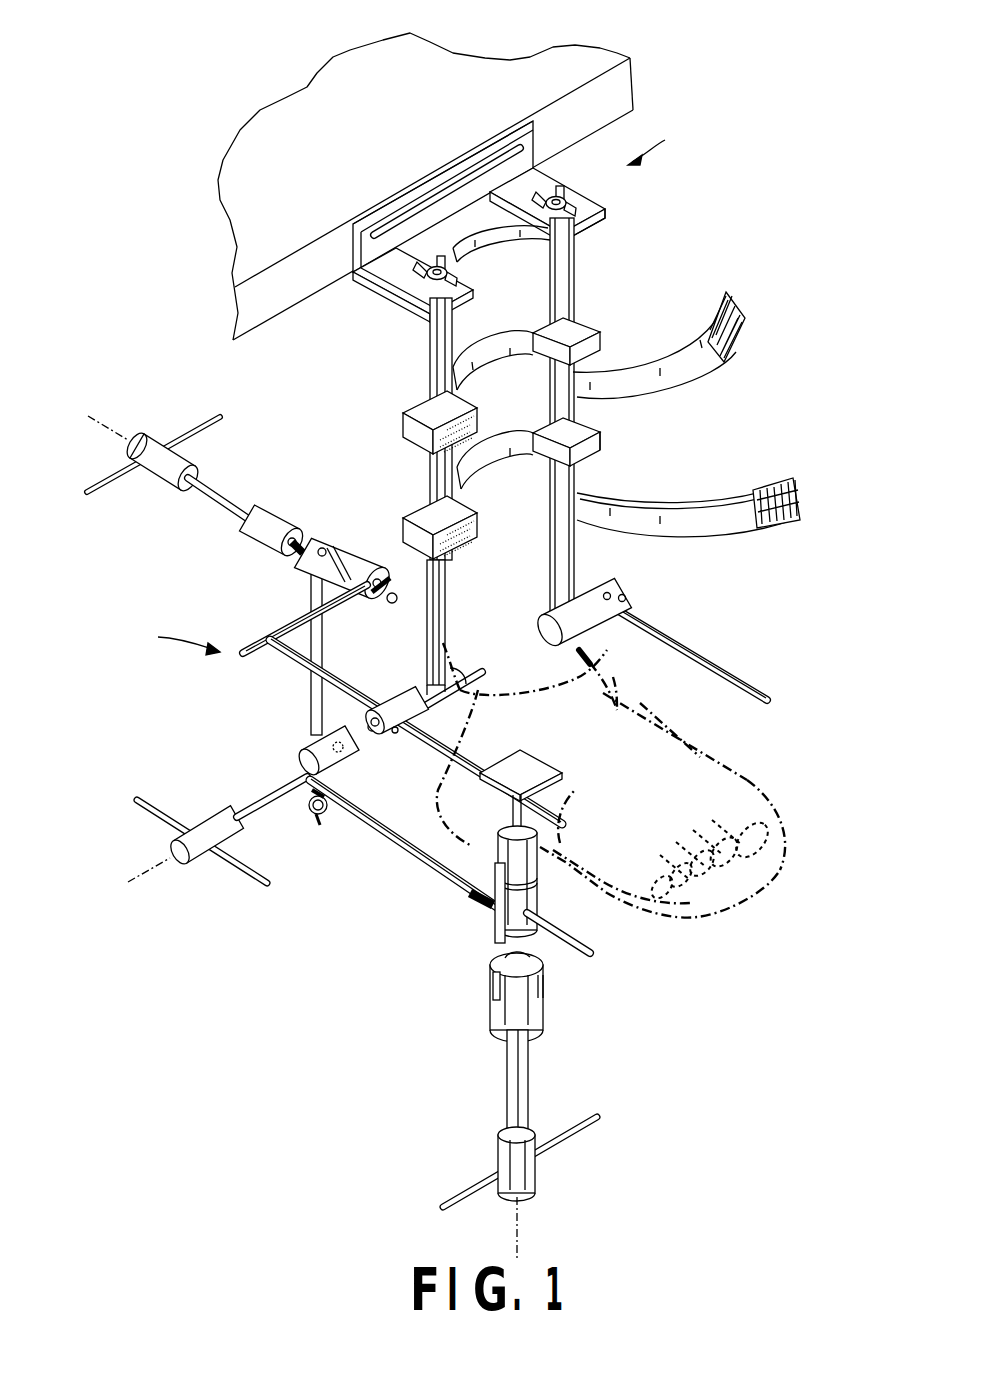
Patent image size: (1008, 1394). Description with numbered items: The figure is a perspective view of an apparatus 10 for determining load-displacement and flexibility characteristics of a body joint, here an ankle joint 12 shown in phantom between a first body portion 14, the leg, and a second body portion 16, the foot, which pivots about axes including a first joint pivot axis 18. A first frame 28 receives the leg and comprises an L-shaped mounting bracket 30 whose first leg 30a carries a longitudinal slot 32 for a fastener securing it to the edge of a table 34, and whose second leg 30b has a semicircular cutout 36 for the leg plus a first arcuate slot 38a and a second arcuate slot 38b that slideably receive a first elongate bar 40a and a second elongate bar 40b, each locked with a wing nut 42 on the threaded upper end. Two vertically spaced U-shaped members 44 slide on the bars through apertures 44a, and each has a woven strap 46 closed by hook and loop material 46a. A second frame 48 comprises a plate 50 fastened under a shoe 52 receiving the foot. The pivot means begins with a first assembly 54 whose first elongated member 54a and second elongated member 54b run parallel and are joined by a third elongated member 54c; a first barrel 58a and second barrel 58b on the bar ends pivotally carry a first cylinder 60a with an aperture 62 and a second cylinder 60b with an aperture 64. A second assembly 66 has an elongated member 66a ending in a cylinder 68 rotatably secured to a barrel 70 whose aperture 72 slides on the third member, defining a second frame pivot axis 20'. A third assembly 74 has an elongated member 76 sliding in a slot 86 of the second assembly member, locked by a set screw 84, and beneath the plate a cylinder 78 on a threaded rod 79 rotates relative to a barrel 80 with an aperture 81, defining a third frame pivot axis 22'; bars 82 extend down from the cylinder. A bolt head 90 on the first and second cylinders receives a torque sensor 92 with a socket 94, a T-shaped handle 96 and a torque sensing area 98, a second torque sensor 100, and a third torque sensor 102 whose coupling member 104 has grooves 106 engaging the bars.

The apparatus 10 is at (171, 639).
The ankle joint 12 is at (537, 637).
The first body portion 14 is at (600, 478).
The second body portion 16 is at (684, 744).
The first joint pivot axis 18 is at (160, 880).
The second frame pivot axis 20' is at (153, 431).
The third frame pivot axis 22' is at (520, 1187).
The first frame 28 is at (663, 145).
The mounting bracket 30 is at (495, 166).
The first leg 30a is at (533, 122).
The second leg 30b is at (606, 218).
The longitudinal slot 32 is at (430, 205).
The table 34 is at (376, 116).
The semicircular cutout 36 is at (528, 228).
The first arcuate slot 38a is at (353, 226).
The second arcuate slot 38b is at (544, 191).
The first elongate bar 40a is at (440, 348).
The second elongate bar 40b is at (574, 259).
The wing nut 42 is at (564, 198).
The U-shaped member 44 is at (510, 452).
The aperture 44a is at (594, 327).
The woven strap 46 is at (716, 505).
The hook and loop material 46a is at (742, 330).
The second frame 48 is at (802, 835).
The plate 50 is at (478, 784).
The shoe 52 is at (755, 785).
The first assembly 54 is at (512, 704).
The first elongated member 54a is at (565, 820).
The second elongated member 54b is at (758, 692).
The third elongated member 54c is at (276, 630).
The first barrel 58a is at (458, 706).
The second barrel 58b is at (587, 655).
The first cylinder 60a is at (389, 710).
The second cylinder 60b is at (627, 595).
The aperture 62 is at (398, 736).
The aperture 64 is at (628, 601).
The second assembly 66 is at (299, 606).
The elongated member 66a is at (311, 688).
The cylinder 68 is at (296, 548).
The barrel 70 is at (380, 598).
The aperture 72 is at (344, 565).
The third assembly 74 is at (472, 901).
The elongated member 76 is at (416, 848).
The cylinder 78 is at (540, 854).
The threaded rod 79 is at (504, 828).
The barrel 80 is at (539, 887).
The aperture 81 is at (552, 918).
The bars 82 is at (495, 913).
The set screw 84 is at (392, 600).
The slot 86 is at (306, 754).
The bolt head 90 is at (322, 546).
The torque sensor 92 is at (280, 788).
The socket 94 is at (376, 778).
The T-shaped handle 96 is at (204, 846).
The torque sensing area 98 is at (315, 811).
The second torque sensor 100 is at (196, 478).
The third torque sensor 102 is at (530, 1074).
The coupling member 104 is at (525, 1006).
The grooves 106 is at (494, 983).